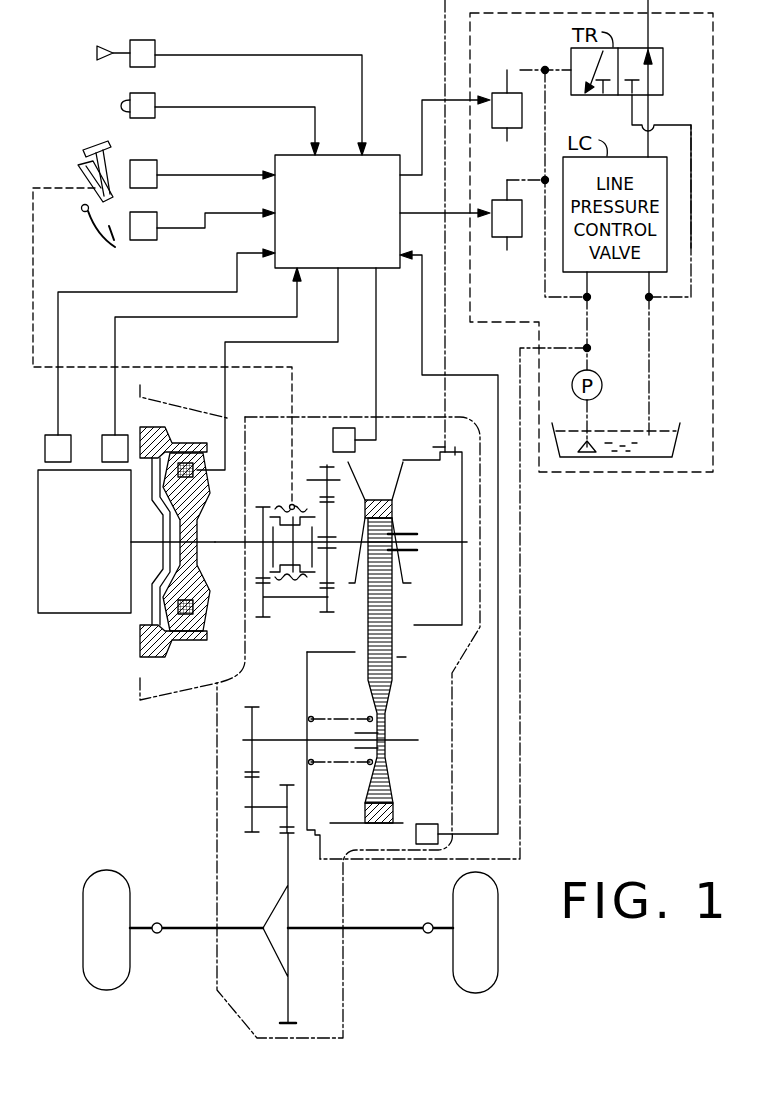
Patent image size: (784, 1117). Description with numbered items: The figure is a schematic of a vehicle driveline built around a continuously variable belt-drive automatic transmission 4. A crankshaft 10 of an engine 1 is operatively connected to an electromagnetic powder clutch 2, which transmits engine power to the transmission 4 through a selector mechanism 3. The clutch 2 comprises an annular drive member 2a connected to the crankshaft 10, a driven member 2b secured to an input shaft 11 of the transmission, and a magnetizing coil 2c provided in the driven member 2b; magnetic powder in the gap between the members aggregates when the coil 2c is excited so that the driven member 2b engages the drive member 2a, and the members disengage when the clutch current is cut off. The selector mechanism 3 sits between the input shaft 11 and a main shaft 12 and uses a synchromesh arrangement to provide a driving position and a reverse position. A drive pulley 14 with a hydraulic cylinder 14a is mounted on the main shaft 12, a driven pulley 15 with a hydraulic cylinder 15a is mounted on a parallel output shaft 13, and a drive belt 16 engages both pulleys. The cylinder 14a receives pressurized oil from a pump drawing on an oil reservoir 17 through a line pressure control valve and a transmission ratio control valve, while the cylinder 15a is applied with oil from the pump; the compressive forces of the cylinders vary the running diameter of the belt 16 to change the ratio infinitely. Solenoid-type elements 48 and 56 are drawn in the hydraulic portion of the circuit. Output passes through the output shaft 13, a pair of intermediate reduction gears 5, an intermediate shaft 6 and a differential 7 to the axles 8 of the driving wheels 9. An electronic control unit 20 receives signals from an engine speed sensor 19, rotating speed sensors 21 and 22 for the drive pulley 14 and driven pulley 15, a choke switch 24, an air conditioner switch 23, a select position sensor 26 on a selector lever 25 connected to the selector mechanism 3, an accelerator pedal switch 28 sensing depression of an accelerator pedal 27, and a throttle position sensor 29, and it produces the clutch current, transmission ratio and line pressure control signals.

The engine 1 is at (70, 614).
The electromagnetic powder clutch 2 is at (169, 532).
The annular drive member 2a is at (146, 434).
The driven member 2b is at (196, 500).
The magnetizing coil 2c is at (193, 461).
The selector mechanism 3 is at (277, 497).
The continuously variable belt-drive automatic transmission 4 is at (402, 551).
The intermediate reduction gears 5 is at (271, 689).
The intermediate shaft 6 is at (268, 806).
The differential 7 is at (278, 921).
The axles 8 is at (200, 927).
The vehicle driving wheels 9 is at (120, 965).
The crankshaft 10 is at (146, 545).
The input shaft 11 is at (218, 544).
The main shaft 12 is at (337, 538).
The output shaft 13 is at (265, 740).
The drive pulley 14 is at (356, 480).
The hydraulic cylinder 14a is at (440, 593).
The driven pulley 15 is at (393, 666).
The hydraulic cylinder 15a is at (323, 676).
The drive belt 16 is at (366, 642).
The oil reservoir 17 is at (682, 432).
The engine speed sensor 19 is at (99, 435).
The electronic control unit 20 is at (382, 155).
The rotating speed sensor 21 is at (333, 441).
The rotating speed sensor 22 is at (432, 815).
The air conditioner switch 23 is at (155, 101).
The choke switch 24 is at (155, 48).
The selector lever 25 is at (90, 148).
The select position sensor 26 is at (157, 169).
The accelerator pedal 27 is at (95, 239).
The accelerator pedal switch 28 is at (157, 221).
The throttle position sensor 29 is at (54, 434).
The solenoid valve 48 is at (496, 93).
The solenoid valve 56 is at (496, 200).